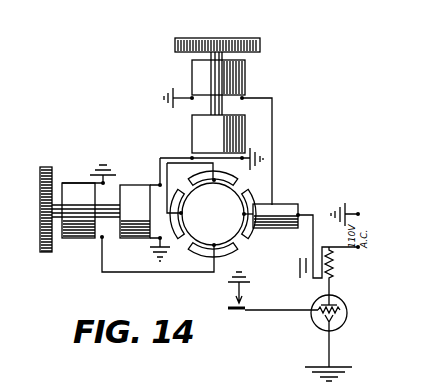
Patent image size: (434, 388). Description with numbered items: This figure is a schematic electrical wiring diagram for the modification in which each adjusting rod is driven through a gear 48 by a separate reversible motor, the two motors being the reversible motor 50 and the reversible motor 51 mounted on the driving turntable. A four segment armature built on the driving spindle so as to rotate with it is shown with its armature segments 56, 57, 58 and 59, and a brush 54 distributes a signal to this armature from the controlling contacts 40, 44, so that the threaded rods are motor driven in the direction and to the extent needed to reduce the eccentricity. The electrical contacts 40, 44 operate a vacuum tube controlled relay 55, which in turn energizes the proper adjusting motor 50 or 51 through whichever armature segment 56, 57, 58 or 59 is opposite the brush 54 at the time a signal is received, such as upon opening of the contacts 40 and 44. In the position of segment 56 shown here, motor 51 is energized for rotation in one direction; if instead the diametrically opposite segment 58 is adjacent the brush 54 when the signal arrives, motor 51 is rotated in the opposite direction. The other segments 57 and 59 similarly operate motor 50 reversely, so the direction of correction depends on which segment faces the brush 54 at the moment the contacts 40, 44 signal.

The gear 48 is at (260, 40).
The reversible motor 51 is at (200, 126).
The reversible motor 50 is at (123, 190).
The armature segment 58 is at (183, 227).
The armature segment 59 is at (240, 211).
The armature segment 56 is at (254, 190).
The armature segment 57 is at (236, 252).
The brush 54 is at (288, 208).
The controlling contact 40 is at (228, 291).
The controlling contact 44 is at (234, 310).
The vacuum tube controlled relay 55 is at (341, 302).